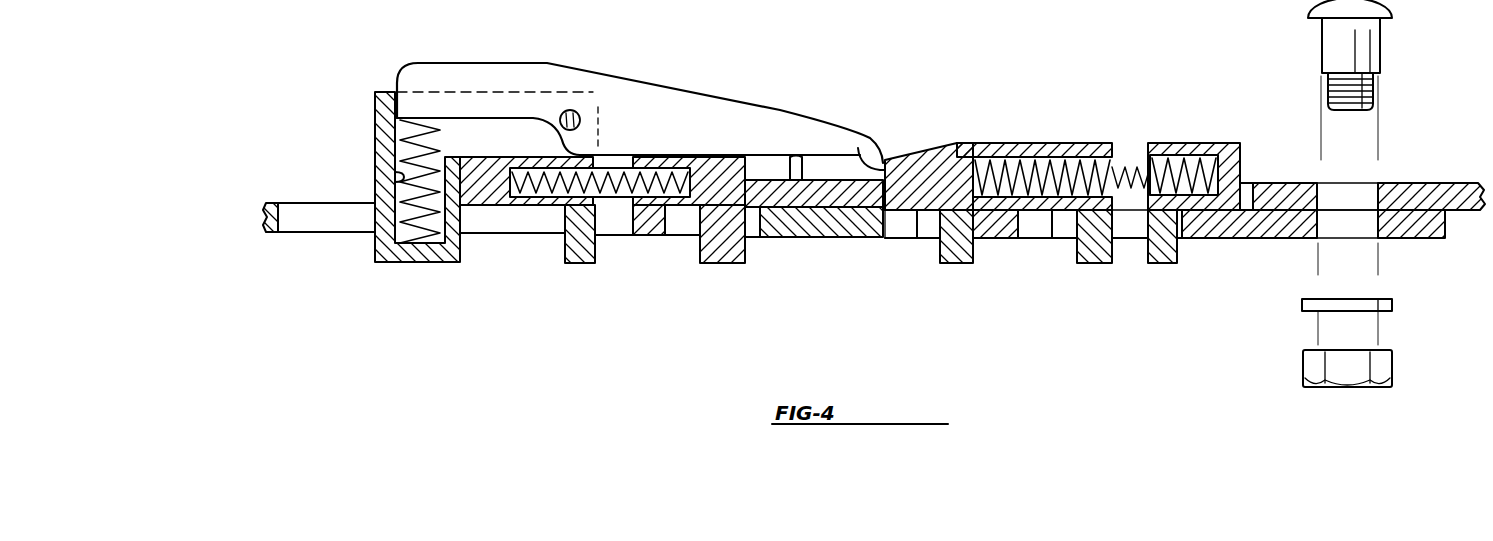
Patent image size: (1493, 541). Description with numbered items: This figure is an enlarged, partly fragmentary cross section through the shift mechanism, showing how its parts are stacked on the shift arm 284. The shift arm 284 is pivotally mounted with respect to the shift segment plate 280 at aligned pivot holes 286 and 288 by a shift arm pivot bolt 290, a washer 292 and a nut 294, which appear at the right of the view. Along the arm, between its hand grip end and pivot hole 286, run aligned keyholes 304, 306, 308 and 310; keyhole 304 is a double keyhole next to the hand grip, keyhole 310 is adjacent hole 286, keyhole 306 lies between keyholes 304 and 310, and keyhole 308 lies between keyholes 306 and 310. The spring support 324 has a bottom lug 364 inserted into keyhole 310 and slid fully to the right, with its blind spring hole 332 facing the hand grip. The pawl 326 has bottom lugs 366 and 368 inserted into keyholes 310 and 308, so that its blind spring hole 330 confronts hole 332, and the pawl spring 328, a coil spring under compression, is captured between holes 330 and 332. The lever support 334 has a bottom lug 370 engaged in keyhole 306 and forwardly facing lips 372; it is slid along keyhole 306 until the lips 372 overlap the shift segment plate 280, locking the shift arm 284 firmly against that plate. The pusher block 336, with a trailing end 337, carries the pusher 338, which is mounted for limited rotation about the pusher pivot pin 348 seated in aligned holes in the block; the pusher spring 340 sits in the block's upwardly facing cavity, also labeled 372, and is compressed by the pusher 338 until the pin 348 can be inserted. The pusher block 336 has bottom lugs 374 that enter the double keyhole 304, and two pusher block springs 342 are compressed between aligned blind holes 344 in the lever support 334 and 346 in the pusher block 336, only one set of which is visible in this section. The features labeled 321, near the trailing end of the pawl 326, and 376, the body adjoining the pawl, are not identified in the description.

The shift segment plate 280 is at (815, 192).
The shift arm 284 is at (1250, 240).
The pivot hole 286 is at (1348, 226).
The pivot hole 288 is at (1348, 193).
The shift arm pivot bolt 290 is at (1370, 50).
The washer 292 is at (1390, 311).
The nut 294 is at (1383, 372).
The double keyhole 304 is at (339, 215).
The keyhole 306 is at (692, 235).
The keyhole 308 is at (925, 225).
The keyhole 310 is at (1038, 225).
The lever nose 321 is at (862, 160).
The spring support 324 is at (1190, 143).
The pawl 326 is at (1025, 143).
The pawl spring 328 is at (1140, 160).
The blind spring hole 330 is at (1113, 163).
The blind spring hole 332 is at (1142, 155).
The lever support 334 is at (717, 165).
The pusher block 336 is at (490, 167).
The trailing end 337 is at (374, 118).
The pusher 338 is at (690, 100).
The pusher spring 340 is at (420, 147).
The pusher block springs 342 is at (618, 200).
The blind hole 344 is at (650, 236).
The blind hole 346 is at (513, 208).
The pusher pivot pin 348 is at (576, 113).
The bottom lug 364 is at (1165, 265).
The bottom lug 366 is at (1098, 265).
The bottom lug 368 is at (952, 265).
The bottom lug 370 is at (737, 263).
The forwardly facing lips 372 is at (398, 177).
The bottom lugs 374 is at (580, 263).
The body 376 is at (917, 152).